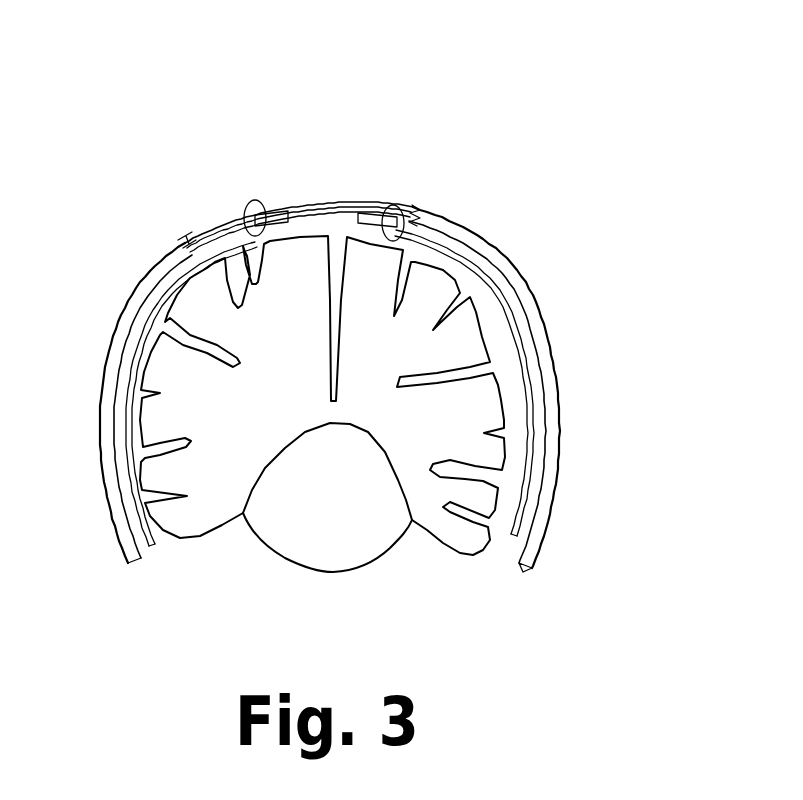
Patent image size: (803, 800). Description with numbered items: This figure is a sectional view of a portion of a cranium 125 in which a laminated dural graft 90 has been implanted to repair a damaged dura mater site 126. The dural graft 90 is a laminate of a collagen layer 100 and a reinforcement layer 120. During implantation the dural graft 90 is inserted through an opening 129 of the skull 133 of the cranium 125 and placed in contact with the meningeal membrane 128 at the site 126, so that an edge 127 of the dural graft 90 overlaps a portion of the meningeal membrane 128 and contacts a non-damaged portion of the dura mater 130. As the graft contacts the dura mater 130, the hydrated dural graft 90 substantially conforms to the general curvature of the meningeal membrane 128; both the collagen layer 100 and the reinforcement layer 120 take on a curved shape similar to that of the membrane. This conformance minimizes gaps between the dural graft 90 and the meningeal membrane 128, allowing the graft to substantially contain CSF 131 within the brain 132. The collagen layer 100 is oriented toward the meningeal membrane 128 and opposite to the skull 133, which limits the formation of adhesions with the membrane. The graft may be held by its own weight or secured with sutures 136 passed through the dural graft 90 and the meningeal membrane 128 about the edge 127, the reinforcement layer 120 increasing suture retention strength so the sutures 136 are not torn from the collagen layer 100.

The dural graft 90 is at (372, 161).
The collagen layer 100 is at (337, 208).
The reinforcement layer 120 is at (320, 208).
The cranium 125 is at (603, 381).
The damaged dura mater site 126 is at (380, 202).
The edge 127 is at (271, 195).
The meningeal membrane 128 is at (184, 233).
The opening 129 is at (197, 216).
The dura mater 130 is at (225, 220).
The CSF 131 is at (465, 272).
The brain 132 is at (476, 327).
The skull 133 is at (137, 290).
The sutures 136 is at (420, 198).